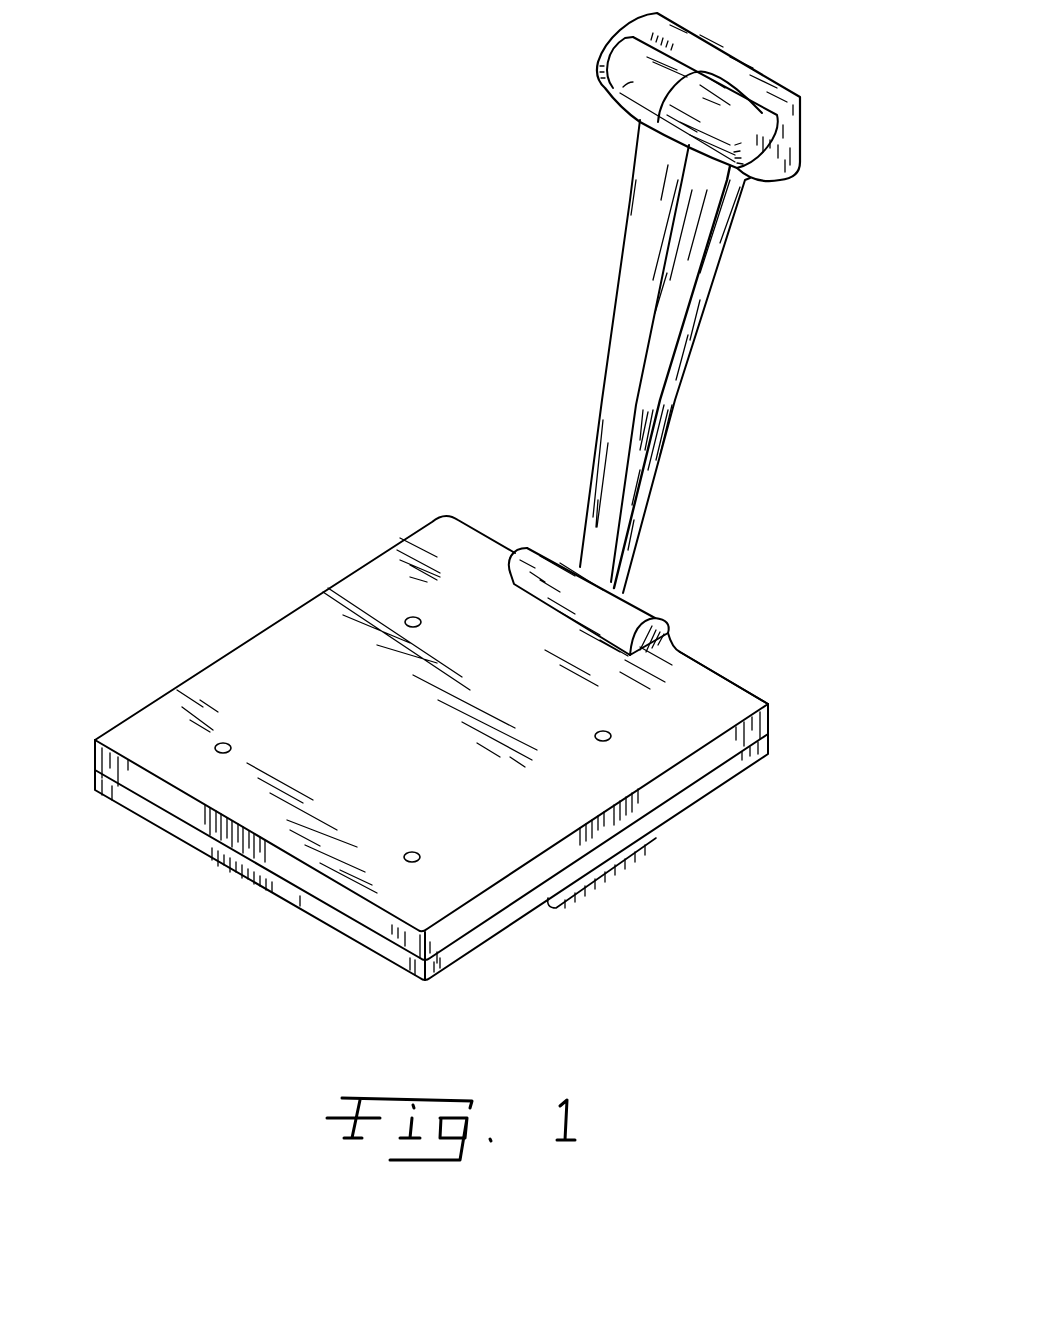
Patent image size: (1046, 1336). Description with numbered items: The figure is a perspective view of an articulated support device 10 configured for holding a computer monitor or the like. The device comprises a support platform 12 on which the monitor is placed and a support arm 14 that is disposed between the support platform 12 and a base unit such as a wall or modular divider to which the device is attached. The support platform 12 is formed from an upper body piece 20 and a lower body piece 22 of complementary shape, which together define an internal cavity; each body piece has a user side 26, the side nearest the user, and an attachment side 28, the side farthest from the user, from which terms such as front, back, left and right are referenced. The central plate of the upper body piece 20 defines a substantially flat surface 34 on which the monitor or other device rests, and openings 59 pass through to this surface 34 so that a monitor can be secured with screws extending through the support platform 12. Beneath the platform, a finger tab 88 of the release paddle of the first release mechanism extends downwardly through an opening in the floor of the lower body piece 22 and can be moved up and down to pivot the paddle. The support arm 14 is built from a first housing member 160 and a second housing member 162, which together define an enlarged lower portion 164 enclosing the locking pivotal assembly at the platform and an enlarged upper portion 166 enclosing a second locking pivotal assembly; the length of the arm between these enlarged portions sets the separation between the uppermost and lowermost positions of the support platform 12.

The articulated support device 10 is at (352, 360).
The support platform 12 is at (375, 522).
The support arm 14 is at (712, 350).
The upper body piece 20 is at (773, 722).
The lower body piece 22 is at (773, 744).
The user side 26 is at (228, 920).
The attachment side 28 is at (725, 605).
The substantially flat surface 34 is at (440, 765).
The openings 59 is at (421, 621).
The finger tab 88 is at (597, 878).
The first housing member 160 is at (642, 231).
The second housing member 162 is at (688, 258).
The enlarged lower portion 164 is at (553, 567).
The enlarged upper portion 166 is at (606, 94).